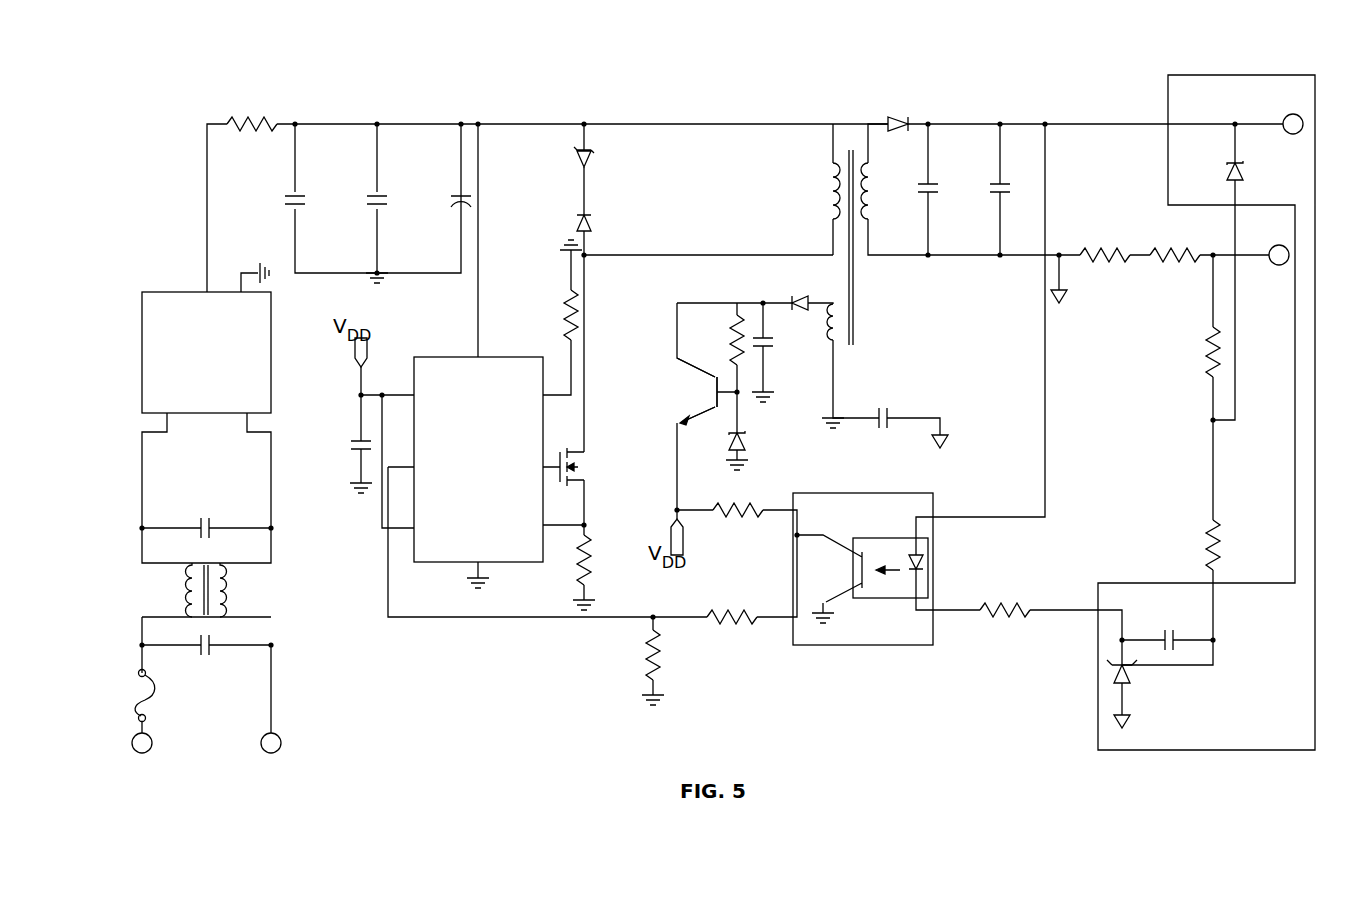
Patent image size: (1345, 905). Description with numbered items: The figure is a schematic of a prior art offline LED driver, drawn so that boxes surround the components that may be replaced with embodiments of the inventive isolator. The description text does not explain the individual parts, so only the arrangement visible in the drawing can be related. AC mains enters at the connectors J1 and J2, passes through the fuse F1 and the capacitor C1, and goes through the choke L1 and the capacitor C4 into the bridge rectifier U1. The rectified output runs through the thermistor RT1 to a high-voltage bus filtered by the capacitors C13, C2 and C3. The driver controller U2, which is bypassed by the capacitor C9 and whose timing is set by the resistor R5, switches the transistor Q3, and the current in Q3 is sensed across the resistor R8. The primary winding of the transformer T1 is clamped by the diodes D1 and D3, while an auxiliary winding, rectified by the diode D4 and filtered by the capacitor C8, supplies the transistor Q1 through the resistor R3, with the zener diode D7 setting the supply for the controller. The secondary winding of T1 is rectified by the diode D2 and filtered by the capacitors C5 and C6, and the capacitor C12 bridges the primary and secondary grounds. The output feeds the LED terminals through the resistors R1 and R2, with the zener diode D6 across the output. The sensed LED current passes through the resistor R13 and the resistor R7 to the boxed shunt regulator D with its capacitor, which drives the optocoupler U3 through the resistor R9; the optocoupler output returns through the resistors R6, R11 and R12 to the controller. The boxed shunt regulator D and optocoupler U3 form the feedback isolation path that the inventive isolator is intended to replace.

The bridge rectifier U1 is at (205, 341).
The thermistor CL-140 RT1 is at (251, 125).
The capacitor 2.2uF 400V C13 is at (263, 202).
The capacitor 2.2uF 400V C2 is at (347, 210).
The capacitor 10uF 400V C3 is at (432, 210).
The capacitor 0.01uF 250V C4 is at (204, 485).
The common-mode choke BU9HS-153R15B L1 is at (269, 591).
The capacitor 0.01uF 250V C1 is at (230, 660).
The fuse 2.0A 250V F1 is at (155, 689).
The AC input connector J1 is at (139, 757).
The AC input connector J2 is at (268, 757).
The capacitor 1.0uF 16V C9 is at (328, 463).
The LED driver IC HV9910B U2 is at (480, 462).
The zener diode 1N4764 D1 is at (661, 156).
The diode MUR140RL D3 is at (643, 216).
The resistor 228k ohm R5 is at (536, 319).
The MOSFET STD1NK60T4 Q3 is at (601, 479).
The resistor 0.56 ohm R8 is at (553, 564).
The transistor MMBT2222A Q1 is at (653, 387).
The resistor 1.0 ohm R3 is at (713, 337).
The capacitor 1.0uF 50V C8 is at (791, 371).
The diode BAV20W-7 D4 is at (792, 304).
The zener diode 2.1V D7 is at (714, 448).
The transformer T1 is at (852, 237).
The capacitor 0.1uF 250VAC C12 is at (889, 432).
The diode B1100-13 D2 is at (900, 97).
The capacitor 1.7uF 25V C5 is at (942, 195).
The capacitor 1.7uF 25V C6 is at (1029, 195).
The resistor 1.78 ohm R1 is at (1099, 273).
The resistor 1.78 ohm R2 is at (1177, 273).
The resistor 100 ohm R13 is at (1183, 372).
The zener diode 20V D6 is at (1212, 172).
The resistor 20k ohm R7 is at (1247, 541).
The element LED is at (1273, 197).
The optocoupler H11A817A U3 is at (919, 569).
The resistor 5.49k ohm R6 is at (737, 539).
The resistor 97.6k ohm R11 is at (734, 646).
The resistor 4.99k ohm R12 is at (610, 662).
The resistor 1.0k ohm R9 is at (1008, 639).
The shunt regulator LMV43 D is at (1115, 661).